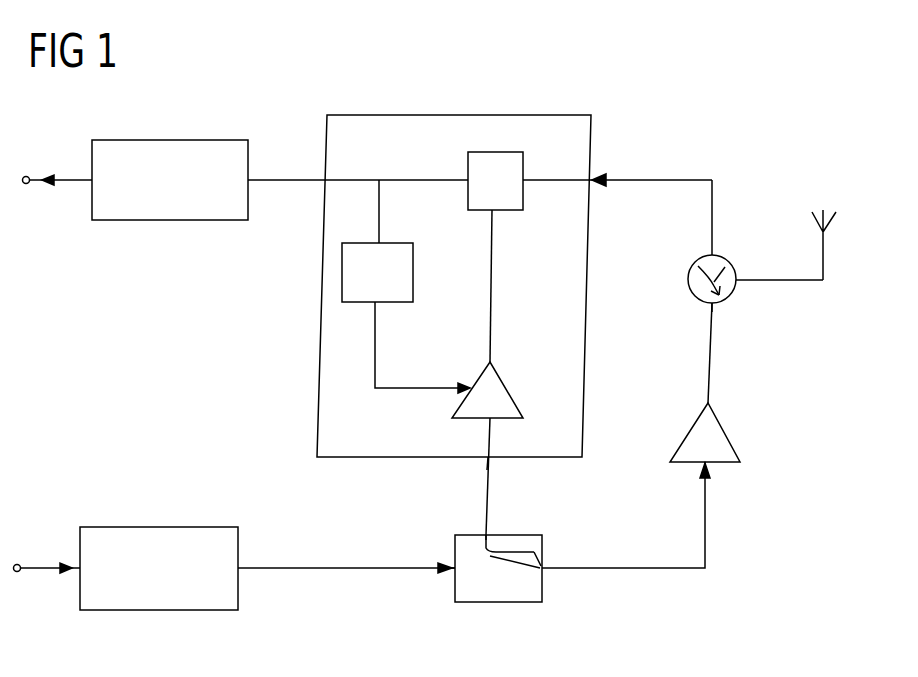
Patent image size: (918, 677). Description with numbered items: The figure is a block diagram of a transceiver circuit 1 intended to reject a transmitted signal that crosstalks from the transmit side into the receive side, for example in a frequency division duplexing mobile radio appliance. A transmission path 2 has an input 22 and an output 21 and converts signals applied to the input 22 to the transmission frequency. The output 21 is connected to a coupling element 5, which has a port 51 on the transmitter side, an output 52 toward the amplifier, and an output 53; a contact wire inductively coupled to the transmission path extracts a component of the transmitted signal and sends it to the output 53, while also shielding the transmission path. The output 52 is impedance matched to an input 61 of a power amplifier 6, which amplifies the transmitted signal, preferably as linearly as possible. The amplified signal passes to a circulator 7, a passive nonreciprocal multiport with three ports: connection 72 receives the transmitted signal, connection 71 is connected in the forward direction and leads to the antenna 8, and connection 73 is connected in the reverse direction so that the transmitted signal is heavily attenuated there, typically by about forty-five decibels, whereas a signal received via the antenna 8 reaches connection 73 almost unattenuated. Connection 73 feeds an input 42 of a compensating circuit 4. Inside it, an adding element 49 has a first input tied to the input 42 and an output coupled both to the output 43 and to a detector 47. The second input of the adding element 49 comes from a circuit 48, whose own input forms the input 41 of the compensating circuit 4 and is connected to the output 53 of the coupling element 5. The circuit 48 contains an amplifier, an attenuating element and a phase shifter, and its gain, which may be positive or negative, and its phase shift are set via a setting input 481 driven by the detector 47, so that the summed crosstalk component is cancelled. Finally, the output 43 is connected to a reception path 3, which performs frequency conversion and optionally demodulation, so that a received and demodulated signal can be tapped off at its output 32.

The transceiver arrangement 1 is at (732, 112).
The transmission path 2 is at (160, 527).
The output 21 is at (245, 572).
The input 22 is at (70, 574).
The reception path 3 is at (172, 140).
The output 32 is at (78, 182).
The compensating circuit 4 is at (446, 114).
The input 41 is at (479, 460).
The input 42 is at (596, 178).
The output 43 is at (325, 178).
The detector 47 is at (414, 276).
The circuit 48 is at (505, 392).
The setting input 481 is at (463, 382).
The adding element 49 is at (502, 212).
The coupling element 5 is at (496, 604).
The coupler input port 51 is at (442, 572).
The output 52 is at (545, 574).
The output 53 is at (492, 538).
The power amplifier 6 is at (738, 444).
The input 61 is at (712, 472).
The circulator 7 is at (688, 281).
The connection 71 is at (738, 278).
The connection 72 is at (716, 305).
The connection 73 is at (713, 256).
The antenna 8 is at (828, 254).